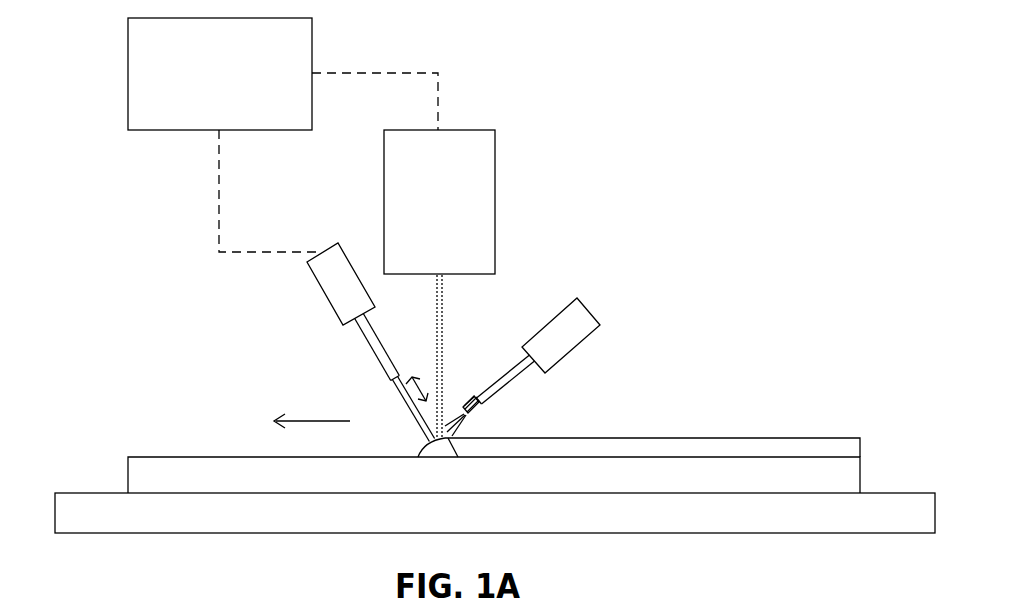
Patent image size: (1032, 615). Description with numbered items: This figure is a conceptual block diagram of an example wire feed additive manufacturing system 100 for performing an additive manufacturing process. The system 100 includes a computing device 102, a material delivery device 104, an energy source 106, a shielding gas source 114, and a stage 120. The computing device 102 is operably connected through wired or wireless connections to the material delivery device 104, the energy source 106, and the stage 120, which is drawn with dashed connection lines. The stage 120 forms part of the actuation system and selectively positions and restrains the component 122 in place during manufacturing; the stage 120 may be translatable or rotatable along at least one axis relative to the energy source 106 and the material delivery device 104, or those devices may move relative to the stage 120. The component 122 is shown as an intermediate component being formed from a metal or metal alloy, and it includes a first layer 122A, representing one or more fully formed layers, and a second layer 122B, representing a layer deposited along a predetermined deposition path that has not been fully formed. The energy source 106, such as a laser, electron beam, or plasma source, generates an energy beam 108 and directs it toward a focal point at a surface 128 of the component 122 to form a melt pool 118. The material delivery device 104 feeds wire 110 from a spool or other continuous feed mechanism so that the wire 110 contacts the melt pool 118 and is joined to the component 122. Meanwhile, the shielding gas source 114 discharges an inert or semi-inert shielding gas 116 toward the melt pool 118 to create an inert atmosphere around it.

The wire feed additive manufacturing system 100 is at (682, 88).
The computing device 102 is at (203, 115).
The material delivery device 104 is at (318, 253).
The energy source 106 is at (455, 130).
The energy beam 108 is at (443, 340).
The wire 110 is at (415, 405).
The shielding gas source 114 is at (587, 307).
The shielding gas 116 is at (456, 398).
The melt pool 118 is at (455, 435).
The stage 120 is at (120, 492).
The component 122 is at (477, 420).
The first layer 122A is at (183, 478).
The second layer 122B is at (712, 438).
The surface 128 is at (255, 458).